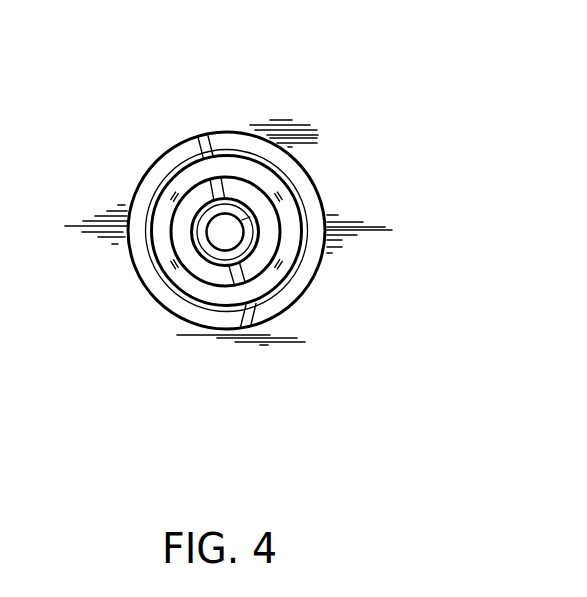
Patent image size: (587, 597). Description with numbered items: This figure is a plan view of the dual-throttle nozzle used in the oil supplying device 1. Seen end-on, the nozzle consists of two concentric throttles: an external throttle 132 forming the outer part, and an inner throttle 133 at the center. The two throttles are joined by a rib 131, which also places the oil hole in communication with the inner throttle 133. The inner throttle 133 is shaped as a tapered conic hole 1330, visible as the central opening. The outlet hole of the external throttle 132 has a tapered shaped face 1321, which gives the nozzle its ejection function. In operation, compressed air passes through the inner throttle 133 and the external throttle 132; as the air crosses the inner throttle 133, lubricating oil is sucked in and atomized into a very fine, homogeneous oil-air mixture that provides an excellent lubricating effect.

The oil supplying device 1 is at (228, 117).
The external throttle 132 is at (258, 171).
The tapered shaped face 1321 is at (292, 222).
The inner throttle 133 is at (262, 240).
The tapered conic hole 1330 is at (218, 231).
The rib 131 is at (236, 273).